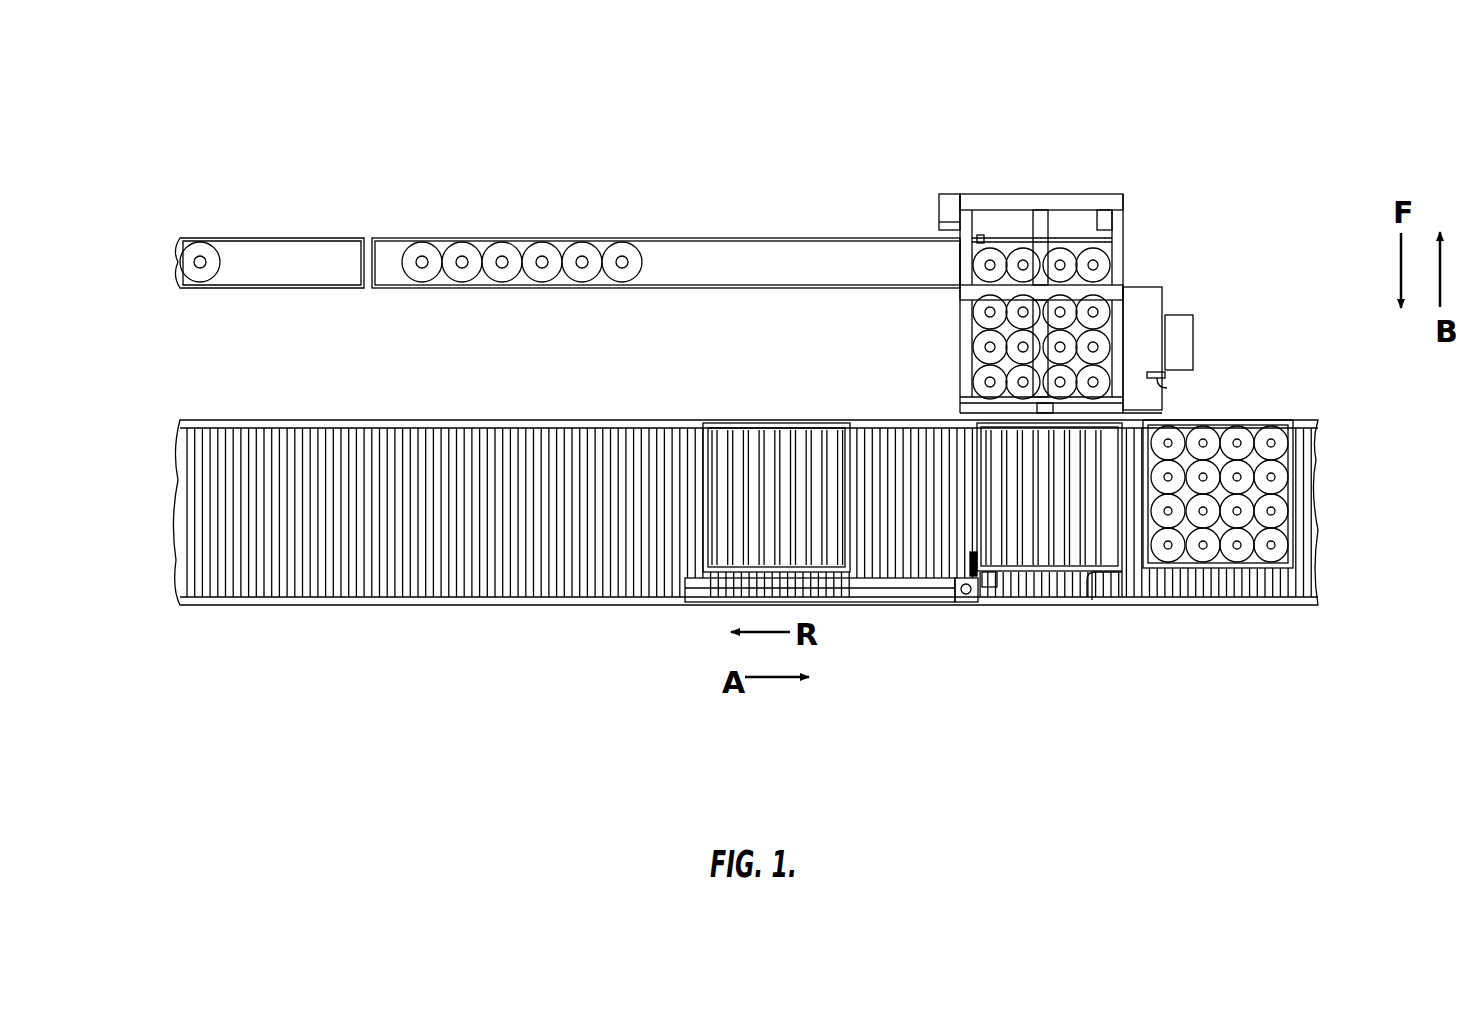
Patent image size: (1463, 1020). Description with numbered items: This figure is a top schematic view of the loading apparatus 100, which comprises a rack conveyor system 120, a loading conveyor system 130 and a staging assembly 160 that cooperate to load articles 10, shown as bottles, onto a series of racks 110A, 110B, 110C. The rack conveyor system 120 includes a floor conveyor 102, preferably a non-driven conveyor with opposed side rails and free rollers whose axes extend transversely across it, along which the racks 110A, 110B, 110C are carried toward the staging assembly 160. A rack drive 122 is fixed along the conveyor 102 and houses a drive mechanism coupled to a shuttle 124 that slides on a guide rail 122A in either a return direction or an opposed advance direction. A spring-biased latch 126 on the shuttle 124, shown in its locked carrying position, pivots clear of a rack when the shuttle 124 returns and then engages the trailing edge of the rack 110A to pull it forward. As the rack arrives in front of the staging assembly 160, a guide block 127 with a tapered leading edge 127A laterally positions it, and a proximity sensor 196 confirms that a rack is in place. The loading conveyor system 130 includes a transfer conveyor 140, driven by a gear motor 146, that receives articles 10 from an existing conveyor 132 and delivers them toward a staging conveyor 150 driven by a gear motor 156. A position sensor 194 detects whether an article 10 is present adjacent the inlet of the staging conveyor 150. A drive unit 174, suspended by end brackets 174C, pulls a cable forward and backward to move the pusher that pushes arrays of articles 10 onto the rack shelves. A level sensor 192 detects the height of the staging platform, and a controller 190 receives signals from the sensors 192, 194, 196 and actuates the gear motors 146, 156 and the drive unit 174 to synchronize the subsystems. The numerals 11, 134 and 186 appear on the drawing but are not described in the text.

The loading apparatus 100 is at (857, 80).
The articles 10 is at (500, 248).
The vial tray 11 is at (1290, 456).
The floor conveyor 102 is at (433, 580).
The rack 110A is at (767, 452).
The rack 110B is at (1043, 568).
The rack 110C is at (1260, 566).
The rack conveyor system 120 is at (909, 695).
The rack drive 122 is at (820, 678).
The guide rail 122A is at (838, 580).
The shuttle 124 is at (961, 602).
The spring-biased latch 126 is at (973, 565).
The guide block 127 is at (1150, 705).
The tapered leading edge 127A is at (1090, 575).
The loading conveyor system 130 is at (567, 204).
The existing conveyor 132 is at (303, 248).
The conveyor outlet 134 is at (944, 300).
The transfer conveyor 140 is at (723, 234).
The gear motor 146 is at (945, 210).
The staging conveyor 150 is at (1109, 228).
The gear motor 156 is at (1112, 222).
The staging assembly 160 is at (1109, 228).
The drive unit 174 is at (1037, 230).
The end brackets 174C is at (1067, 195).
The actuator housing 186 is at (1147, 298).
The controller 190 is at (1178, 347).
The level sensor 192 is at (1165, 386).
The position sensor 194 is at (981, 232).
The proximity sensor 196 is at (1055, 408).